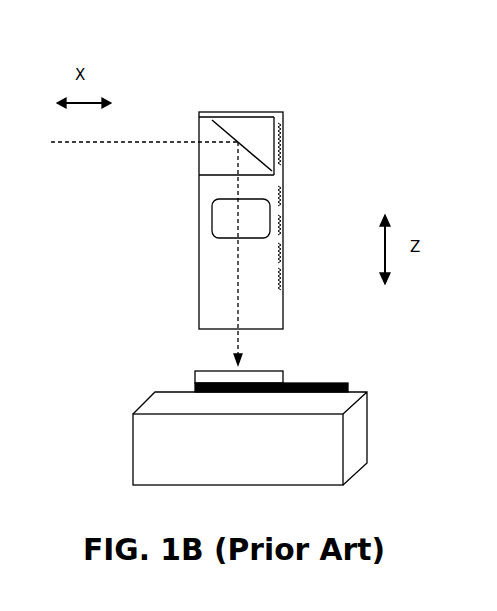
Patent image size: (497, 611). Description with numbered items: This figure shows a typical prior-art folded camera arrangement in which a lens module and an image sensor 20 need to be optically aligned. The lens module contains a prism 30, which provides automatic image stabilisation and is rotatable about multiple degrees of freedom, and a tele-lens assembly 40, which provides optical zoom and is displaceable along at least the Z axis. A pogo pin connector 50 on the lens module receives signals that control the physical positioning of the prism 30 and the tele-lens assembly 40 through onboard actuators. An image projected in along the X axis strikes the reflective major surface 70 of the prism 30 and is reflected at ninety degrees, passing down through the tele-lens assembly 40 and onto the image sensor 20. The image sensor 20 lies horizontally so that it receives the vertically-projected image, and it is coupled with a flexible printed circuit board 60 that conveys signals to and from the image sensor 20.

The image sensor 20 is at (194, 379).
The prism 30 is at (239, 117).
The tele-lens assembly 40 is at (212, 213).
The pogo pin connector 50 is at (284, 128).
The flexible printed circuit board 60 is at (346, 384).
The reflective major surface 70 is at (251, 150).